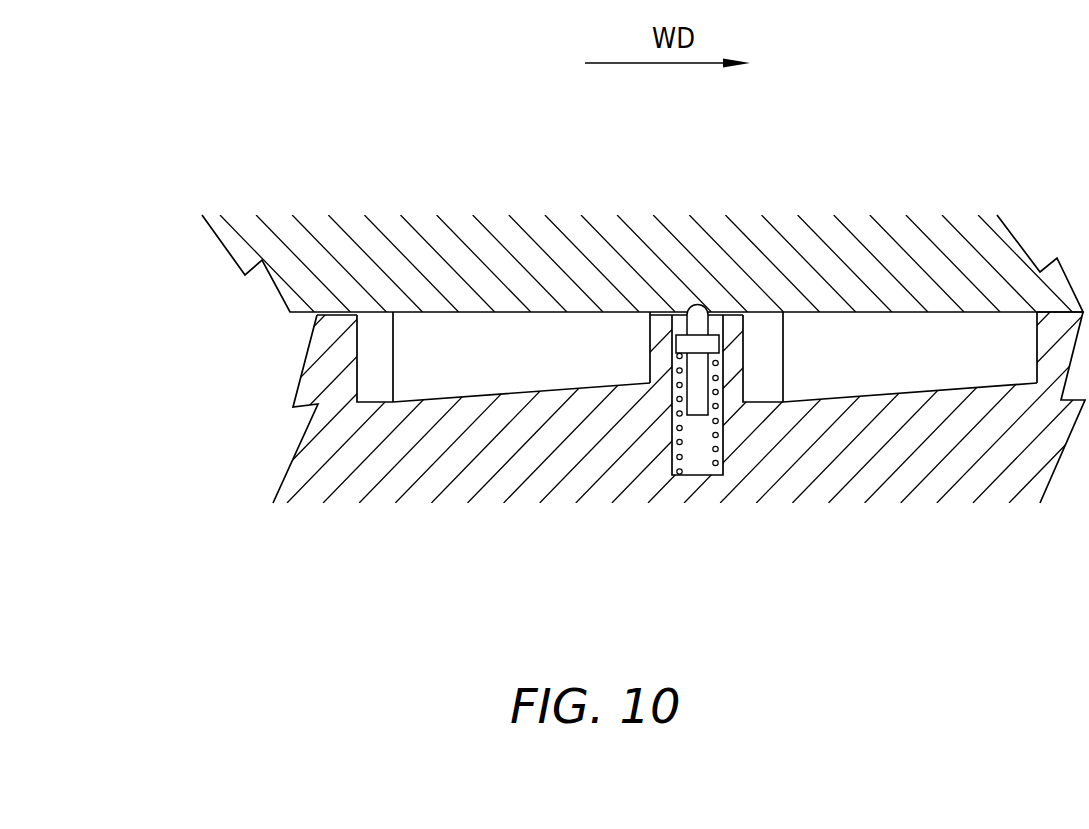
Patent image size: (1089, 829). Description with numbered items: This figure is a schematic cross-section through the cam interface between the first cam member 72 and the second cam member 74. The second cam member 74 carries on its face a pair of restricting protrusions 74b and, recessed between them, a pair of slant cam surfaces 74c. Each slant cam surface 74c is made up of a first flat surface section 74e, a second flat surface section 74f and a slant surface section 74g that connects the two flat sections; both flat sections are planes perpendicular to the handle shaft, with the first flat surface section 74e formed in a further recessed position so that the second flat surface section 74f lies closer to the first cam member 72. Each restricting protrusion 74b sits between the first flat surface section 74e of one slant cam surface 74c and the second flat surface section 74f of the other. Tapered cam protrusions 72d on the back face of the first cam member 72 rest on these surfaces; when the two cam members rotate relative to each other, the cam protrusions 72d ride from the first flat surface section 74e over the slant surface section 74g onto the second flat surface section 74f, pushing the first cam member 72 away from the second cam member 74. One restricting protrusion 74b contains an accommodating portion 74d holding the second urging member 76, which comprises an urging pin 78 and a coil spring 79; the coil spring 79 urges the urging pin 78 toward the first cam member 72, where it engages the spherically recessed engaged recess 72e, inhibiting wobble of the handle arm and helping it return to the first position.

The first cam member 72 is at (246, 302).
The second cam member 74 is at (266, 433).
The restricting protrusion 74b is at (337, 313).
The slant cam surface 74c is at (696, 224).
The accommodating portion 74d is at (717, 440).
The first flat surface section 74e is at (367, 403).
The second flat surface section 74f is at (643, 382).
The slant surface section 74g is at (503, 393).
The cam protrusion 72d is at (390, 402).
The engaged recess 72e is at (712, 311).
The second urging member 76 is at (688, 456).
The urging pin 78 is at (680, 413).
The coil spring 79 is at (697, 400).